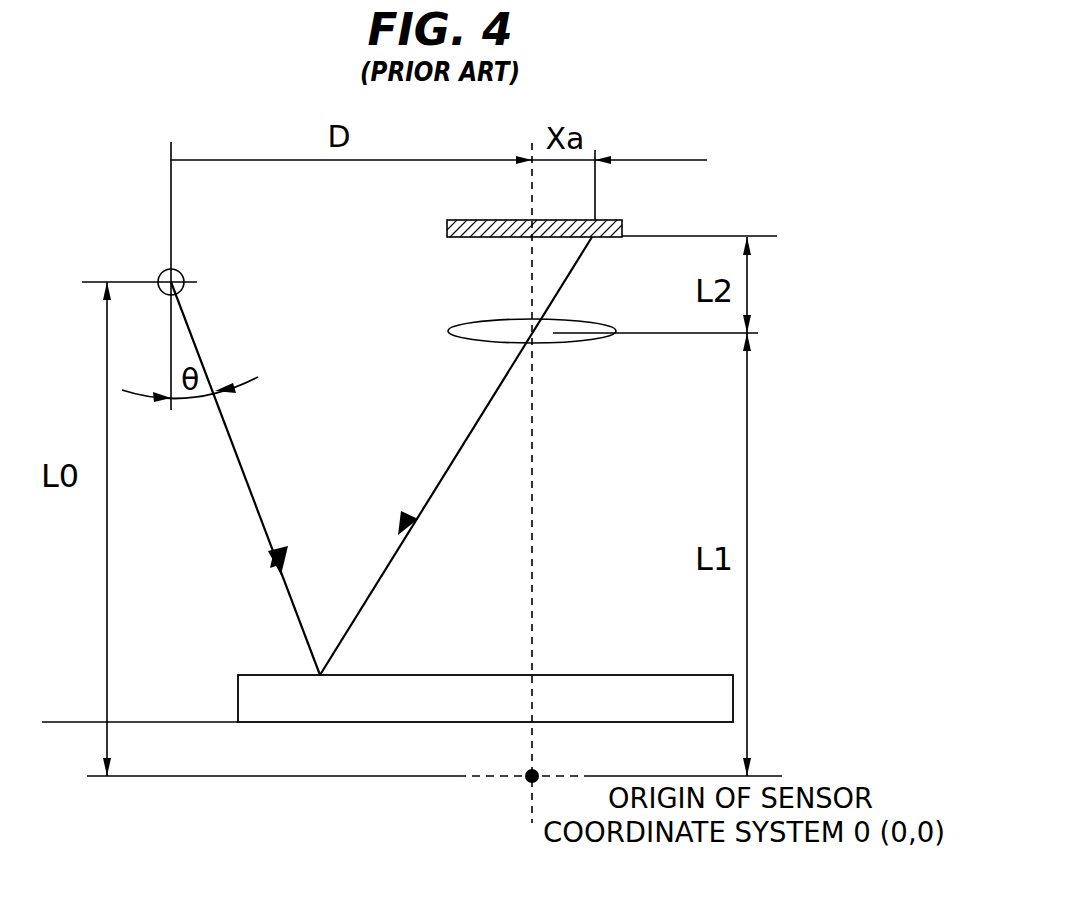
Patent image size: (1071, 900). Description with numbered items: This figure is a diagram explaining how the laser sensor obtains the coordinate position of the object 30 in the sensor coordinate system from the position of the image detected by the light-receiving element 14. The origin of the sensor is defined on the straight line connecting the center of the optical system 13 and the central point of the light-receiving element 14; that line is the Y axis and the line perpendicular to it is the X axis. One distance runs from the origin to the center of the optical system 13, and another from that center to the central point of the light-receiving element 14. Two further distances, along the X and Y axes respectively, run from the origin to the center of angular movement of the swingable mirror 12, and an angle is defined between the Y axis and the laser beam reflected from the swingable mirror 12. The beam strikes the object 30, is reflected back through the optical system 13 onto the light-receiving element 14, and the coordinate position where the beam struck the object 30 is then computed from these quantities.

The swingable mirror 12 is at (160, 272).
The optical system 13 is at (593, 340).
The light-receiving element 14 is at (620, 218).
The object 30 is at (252, 674).